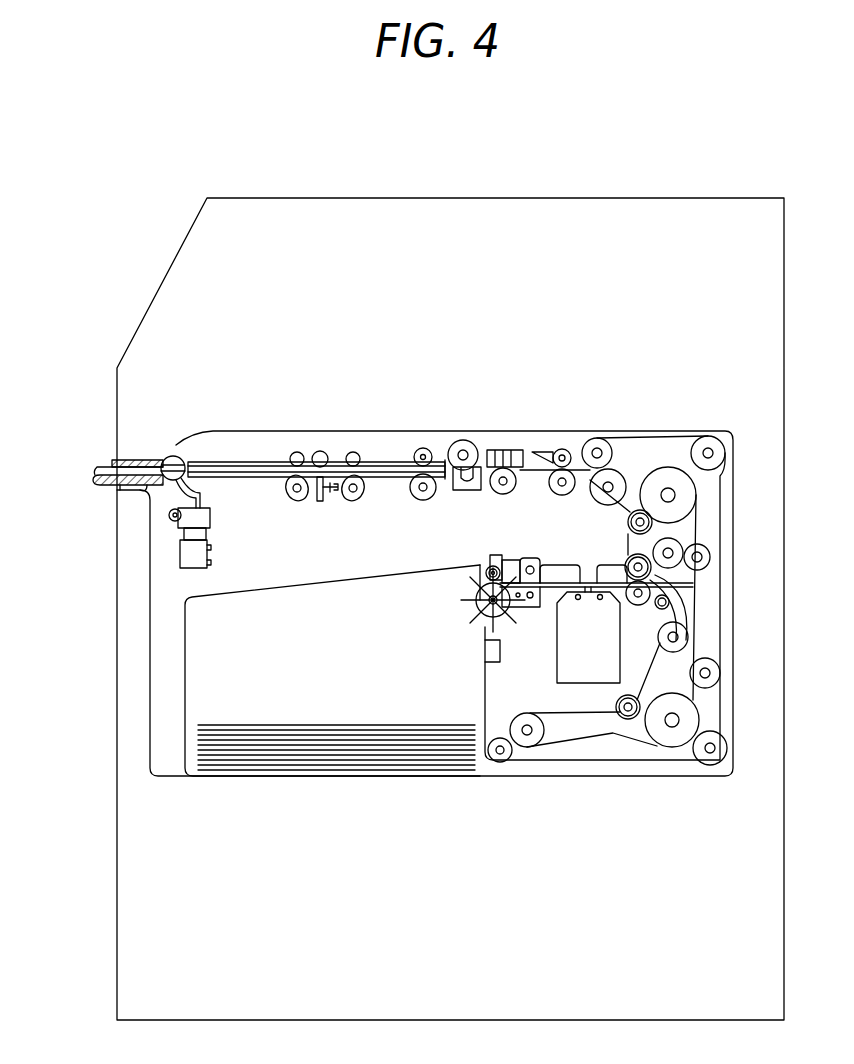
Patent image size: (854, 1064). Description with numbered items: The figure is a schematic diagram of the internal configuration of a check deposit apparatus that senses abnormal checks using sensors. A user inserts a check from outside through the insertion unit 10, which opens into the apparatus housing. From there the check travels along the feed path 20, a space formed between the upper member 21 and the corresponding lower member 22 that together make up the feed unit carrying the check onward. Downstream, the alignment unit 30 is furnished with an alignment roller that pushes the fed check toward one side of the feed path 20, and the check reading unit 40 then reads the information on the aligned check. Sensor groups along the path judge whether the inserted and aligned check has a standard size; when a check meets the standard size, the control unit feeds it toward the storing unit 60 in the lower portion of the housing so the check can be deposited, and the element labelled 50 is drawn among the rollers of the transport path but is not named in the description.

The insertion unit 10 is at (98, 458).
The feed path 20 is at (385, 465).
The upper member 21 is at (238, 463).
The lower member 22 is at (271, 466).
The alignment unit 30 is at (320, 504).
The check reading unit 40 is at (499, 448).
The transfer roller 50 is at (556, 449).
The storing unit 60 is at (328, 693).